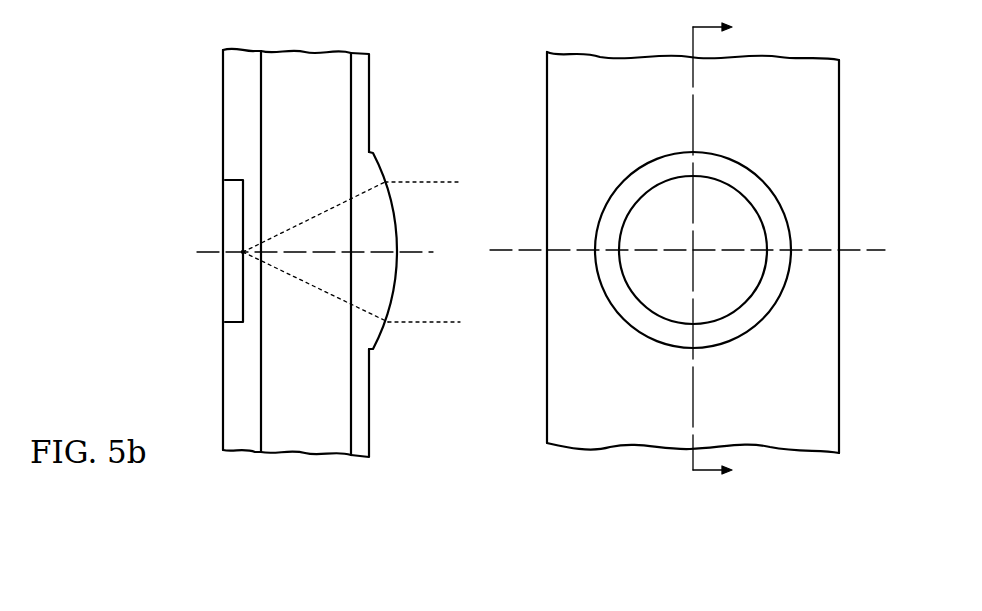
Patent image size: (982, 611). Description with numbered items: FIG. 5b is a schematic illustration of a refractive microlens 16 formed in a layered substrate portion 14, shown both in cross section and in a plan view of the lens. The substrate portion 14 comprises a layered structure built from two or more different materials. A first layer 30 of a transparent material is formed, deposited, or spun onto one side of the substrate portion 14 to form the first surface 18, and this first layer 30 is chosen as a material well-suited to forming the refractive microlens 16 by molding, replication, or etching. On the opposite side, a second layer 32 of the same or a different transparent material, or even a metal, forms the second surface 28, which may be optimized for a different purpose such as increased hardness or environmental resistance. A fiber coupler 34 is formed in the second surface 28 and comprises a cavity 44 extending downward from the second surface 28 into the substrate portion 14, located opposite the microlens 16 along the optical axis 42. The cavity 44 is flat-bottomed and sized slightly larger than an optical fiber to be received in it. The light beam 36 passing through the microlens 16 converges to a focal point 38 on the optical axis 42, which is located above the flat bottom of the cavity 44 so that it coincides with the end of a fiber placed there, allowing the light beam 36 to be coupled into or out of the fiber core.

The substrate portion 14 is at (790, 461).
The refractive microlens 16 is at (393, 215).
The first surface 18 is at (370, 72).
The second surface 28 is at (223, 70).
The first layer 30 is at (362, 457).
The second layer 32 is at (243, 452).
The fiber coupler 34 is at (235, 235).
The light beam 36 is at (423, 178).
The focal point 38 is at (243, 252).
The optical axis 42 is at (314, 252).
The cavity 44 is at (235, 178).